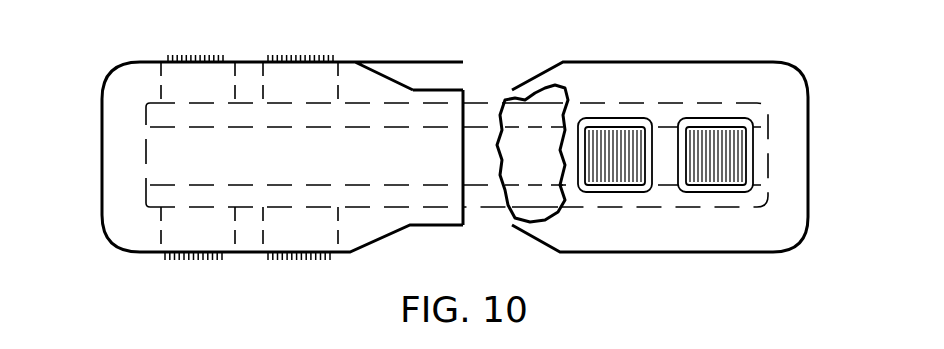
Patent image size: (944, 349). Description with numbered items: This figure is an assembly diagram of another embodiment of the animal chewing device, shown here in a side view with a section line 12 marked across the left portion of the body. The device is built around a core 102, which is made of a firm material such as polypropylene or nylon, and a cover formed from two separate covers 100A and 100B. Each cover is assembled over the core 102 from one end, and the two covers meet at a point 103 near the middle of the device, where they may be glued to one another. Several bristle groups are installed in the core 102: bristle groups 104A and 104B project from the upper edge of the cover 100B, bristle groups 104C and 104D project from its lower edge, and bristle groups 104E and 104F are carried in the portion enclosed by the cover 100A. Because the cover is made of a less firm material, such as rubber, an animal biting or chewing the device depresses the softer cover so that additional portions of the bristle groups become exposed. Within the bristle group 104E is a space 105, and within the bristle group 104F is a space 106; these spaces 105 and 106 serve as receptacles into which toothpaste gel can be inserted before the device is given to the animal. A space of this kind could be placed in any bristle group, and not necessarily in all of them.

The section line 12- 12 is at (172, 28).
The cover 100A is at (632, 62).
The cover 100B is at (102, 104).
The core 102 is at (535, 93).
The point 103 is at (462, 89).
The bristle group 104A is at (222, 52).
The bristle group 104B is at (317, 52).
The bristle group 104C is at (217, 263).
The bristle group 104D is at (312, 263).
The bristle group 104E is at (604, 128).
The bristle group 104F is at (722, 128).
The space 105 is at (623, 192).
The space 106 is at (724, 192).